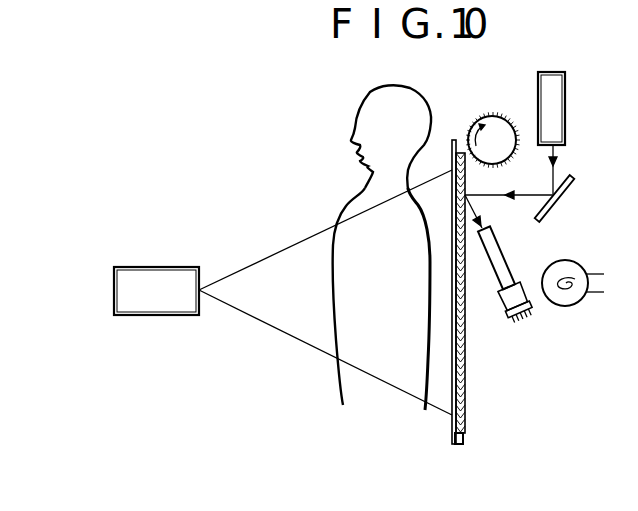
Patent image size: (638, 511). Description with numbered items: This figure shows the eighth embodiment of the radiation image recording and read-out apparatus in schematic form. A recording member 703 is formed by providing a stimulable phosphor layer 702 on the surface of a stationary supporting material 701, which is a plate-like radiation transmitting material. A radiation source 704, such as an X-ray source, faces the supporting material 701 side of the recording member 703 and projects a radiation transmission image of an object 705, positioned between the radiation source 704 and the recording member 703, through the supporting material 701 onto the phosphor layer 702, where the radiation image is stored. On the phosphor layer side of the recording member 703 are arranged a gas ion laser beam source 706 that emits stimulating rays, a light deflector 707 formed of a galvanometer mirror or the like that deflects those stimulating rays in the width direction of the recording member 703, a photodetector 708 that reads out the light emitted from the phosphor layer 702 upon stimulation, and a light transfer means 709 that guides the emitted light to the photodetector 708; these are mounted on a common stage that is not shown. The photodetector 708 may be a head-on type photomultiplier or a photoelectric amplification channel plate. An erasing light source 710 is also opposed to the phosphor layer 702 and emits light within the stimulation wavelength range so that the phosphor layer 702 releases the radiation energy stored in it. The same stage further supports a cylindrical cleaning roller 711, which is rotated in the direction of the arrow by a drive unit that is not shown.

The supporting material 701 is at (452, 438).
The stimulable phosphor layer 702 is at (467, 418).
The recording member 703 is at (463, 443).
The radiation source 704 is at (183, 316).
The object 705 is at (334, 293).
The gas ion laser beam source 706 is at (568, 102).
The light deflector 707 is at (573, 183).
The photodetector 708 is at (501, 310).
The light transfer means 709 is at (507, 249).
The erasing light source 710 is at (575, 307).
The cleaning roller 711 is at (503, 116).